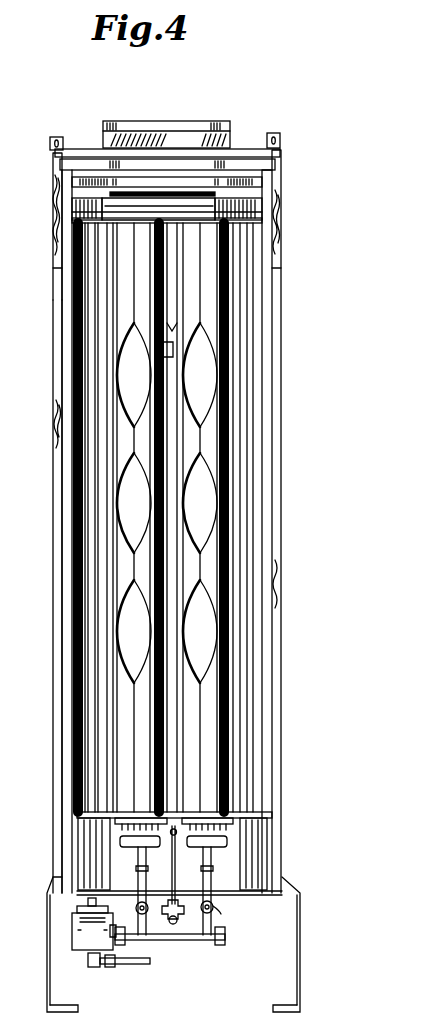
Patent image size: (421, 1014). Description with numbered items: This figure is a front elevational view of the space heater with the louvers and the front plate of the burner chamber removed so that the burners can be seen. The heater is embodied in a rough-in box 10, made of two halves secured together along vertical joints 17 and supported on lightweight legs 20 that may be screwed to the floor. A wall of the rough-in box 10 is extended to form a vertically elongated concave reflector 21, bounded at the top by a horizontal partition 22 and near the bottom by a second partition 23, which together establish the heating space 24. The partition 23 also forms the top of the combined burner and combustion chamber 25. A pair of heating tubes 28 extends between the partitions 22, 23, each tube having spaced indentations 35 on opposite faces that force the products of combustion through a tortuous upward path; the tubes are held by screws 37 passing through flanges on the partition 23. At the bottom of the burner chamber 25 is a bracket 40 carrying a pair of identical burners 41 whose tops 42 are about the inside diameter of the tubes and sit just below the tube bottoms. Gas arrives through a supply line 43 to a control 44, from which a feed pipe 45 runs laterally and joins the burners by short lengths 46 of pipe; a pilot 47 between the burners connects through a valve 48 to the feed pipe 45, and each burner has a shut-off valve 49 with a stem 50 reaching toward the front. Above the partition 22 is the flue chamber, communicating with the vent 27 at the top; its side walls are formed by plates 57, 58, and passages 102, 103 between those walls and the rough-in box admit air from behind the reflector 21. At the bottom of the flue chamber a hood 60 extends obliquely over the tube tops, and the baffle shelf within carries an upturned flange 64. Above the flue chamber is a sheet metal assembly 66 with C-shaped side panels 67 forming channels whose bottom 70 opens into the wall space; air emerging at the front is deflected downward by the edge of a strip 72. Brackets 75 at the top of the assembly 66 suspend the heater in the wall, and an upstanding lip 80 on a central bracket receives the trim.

The rough-in box 10 is at (63, 380).
The vertical joints 17 is at (54, 500).
The legs 20 is at (47, 930).
The concave reflector 21 is at (247, 437).
The horizontal shelf or partition 22 is at (262, 225).
The second shelf or partition 23 is at (258, 812).
The reflecting chamber or heating space 24 is at (250, 510).
The combined burner and combustion space or chamber 25 is at (93, 833).
The vent 27 is at (162, 110).
The heating tubes 28 is at (122, 560).
The spaced indentations 35 is at (203, 368).
The screws 37 is at (118, 816).
The bracket 40 is at (255, 896).
The burners 41 is at (244, 870).
The burner tops 42 is at (212, 847).
The supply line 43 is at (139, 965).
The control 44 is at (82, 950).
The feed pipe 45 is at (197, 940).
The short lengths of pipe 46 is at (225, 938).
The pilot 47 is at (165, 848).
The valve 48 is at (170, 926).
The shut-off valve 49 is at (218, 914).
The stem 50 is at (212, 907).
The side wall plate 57 is at (225, 194).
The side wall plate 58 is at (100, 207).
The deflector or hood 60 is at (218, 208).
The flange 64 is at (262, 182).
The sheet metal assembly 66 is at (37, 225).
The side panels 67 is at (55, 233).
The bottom of channel 70 is at (58, 266).
The strip 72 is at (249, 168).
The brackets 75 is at (55, 137).
The upstanding lip 80 is at (223, 134).
The passage 102 is at (246, 205).
The passage 103 is at (72, 198).